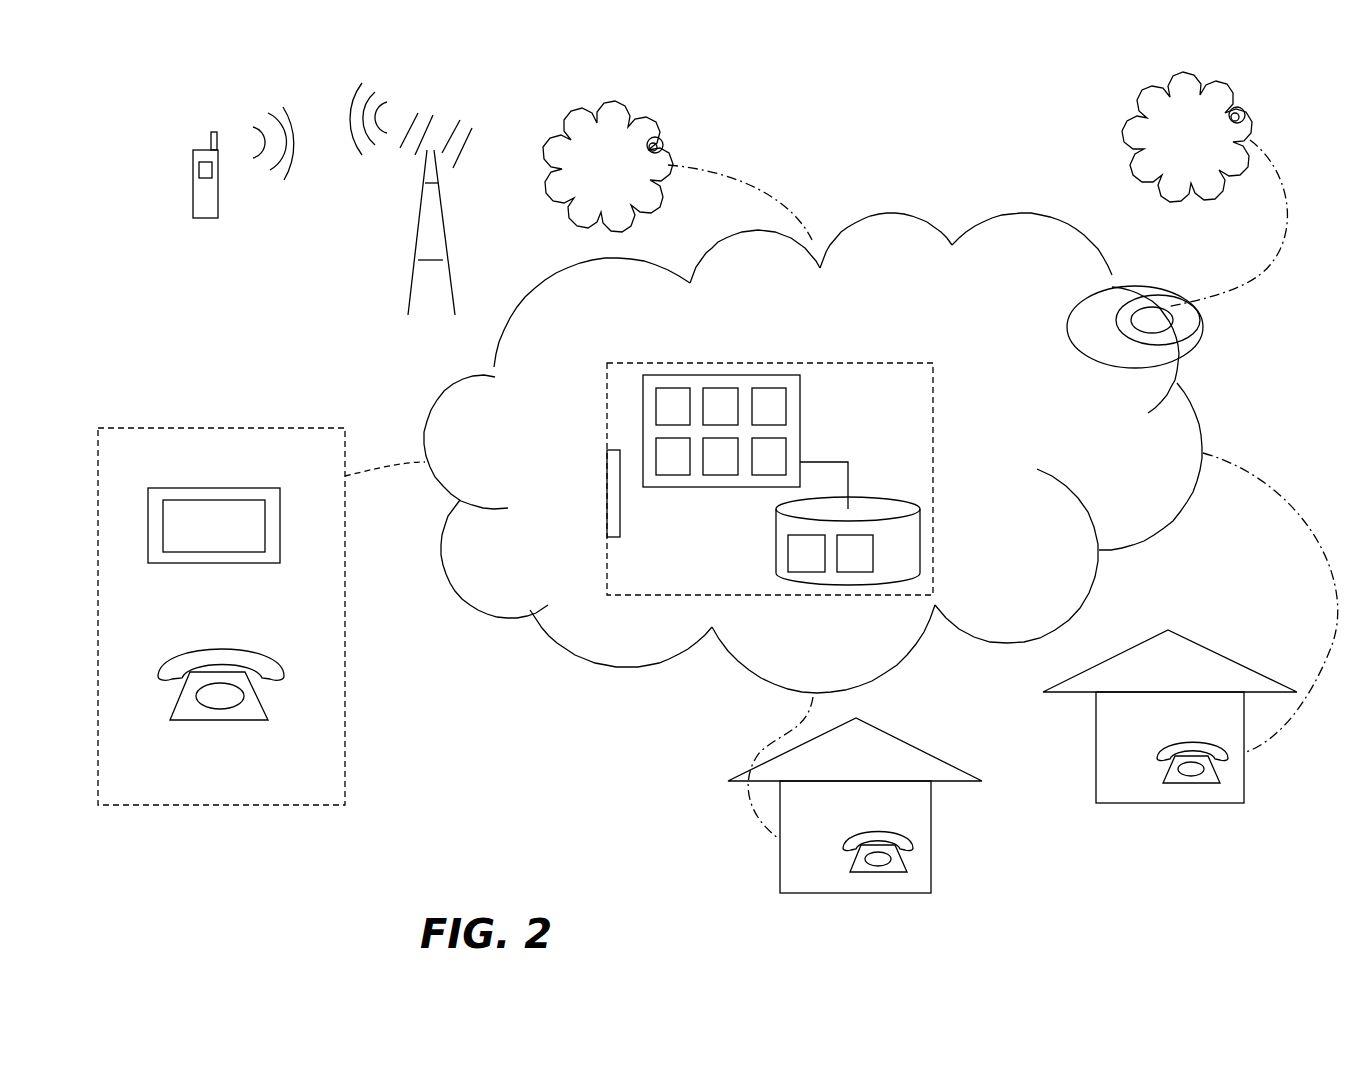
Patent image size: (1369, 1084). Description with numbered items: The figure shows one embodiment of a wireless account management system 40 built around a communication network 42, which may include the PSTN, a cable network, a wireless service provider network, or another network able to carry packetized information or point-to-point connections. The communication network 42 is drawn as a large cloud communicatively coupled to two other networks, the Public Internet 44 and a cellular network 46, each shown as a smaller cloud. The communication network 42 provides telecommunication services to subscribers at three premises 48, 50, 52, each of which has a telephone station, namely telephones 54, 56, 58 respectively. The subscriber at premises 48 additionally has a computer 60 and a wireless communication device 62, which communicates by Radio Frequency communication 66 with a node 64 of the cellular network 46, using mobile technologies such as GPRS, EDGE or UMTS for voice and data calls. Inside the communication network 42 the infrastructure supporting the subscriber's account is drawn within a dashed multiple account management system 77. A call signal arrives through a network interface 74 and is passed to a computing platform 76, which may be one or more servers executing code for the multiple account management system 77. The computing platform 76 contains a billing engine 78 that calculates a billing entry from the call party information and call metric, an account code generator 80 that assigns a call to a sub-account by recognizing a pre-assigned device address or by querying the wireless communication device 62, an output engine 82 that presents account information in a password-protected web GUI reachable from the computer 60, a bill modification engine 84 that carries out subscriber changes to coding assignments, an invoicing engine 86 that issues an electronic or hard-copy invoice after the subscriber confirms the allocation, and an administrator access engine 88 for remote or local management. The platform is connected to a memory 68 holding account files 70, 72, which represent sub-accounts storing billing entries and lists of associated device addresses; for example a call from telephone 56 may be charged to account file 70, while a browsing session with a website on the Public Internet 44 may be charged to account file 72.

The wireless account management system 40 is at (897, 114).
The communication network 42 is at (1083, 421).
The Public Internet 44 is at (1191, 151).
The cellular network 46 is at (611, 176).
The premises 48 is at (318, 808).
The premises 50 is at (775, 868).
The premises 52 is at (1090, 733).
The telephone 54 is at (200, 725).
The telephone 56 is at (842, 848).
The telephone 58 is at (1157, 775).
The computer 60 is at (236, 534).
The wireless communication device 62 is at (192, 221).
The node 64 is at (413, 278).
The Radio Frequency communication 66 is at (332, 141).
The memory 68 is at (914, 561).
The account file 70 is at (818, 570).
The account file 72 is at (867, 570).
The network interface 74 is at (595, 460).
The computing platform 76 is at (728, 490).
The multiple account management system 77 is at (937, 372).
The billing engine 78 is at (685, 423).
The account code generator 80 is at (732, 423).
The output engine 82 is at (781, 423).
The bill modification engine 84 is at (685, 473).
The invoicing engine 86 is at (732, 473).
The administrator access engine 88 is at (781, 473).